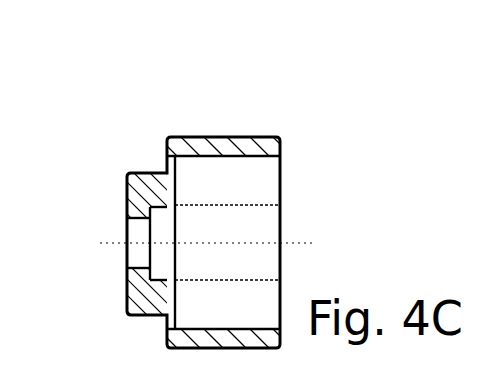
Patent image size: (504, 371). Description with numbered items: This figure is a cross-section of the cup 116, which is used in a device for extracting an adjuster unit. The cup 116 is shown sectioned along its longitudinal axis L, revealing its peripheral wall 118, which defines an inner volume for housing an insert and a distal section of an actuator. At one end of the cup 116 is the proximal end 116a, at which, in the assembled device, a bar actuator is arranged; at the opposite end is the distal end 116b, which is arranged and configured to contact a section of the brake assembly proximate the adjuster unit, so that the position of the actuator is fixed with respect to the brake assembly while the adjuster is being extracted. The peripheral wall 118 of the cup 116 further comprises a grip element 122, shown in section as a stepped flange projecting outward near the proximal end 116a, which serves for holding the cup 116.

The cup 116 is at (138, 111).
The proximal end 116a is at (130, 280).
The distal end 116b is at (298, 145).
The peripheral wall 118 is at (215, 138).
The grip element 122 is at (150, 163).
The longitudinal axis L is at (221, 236).